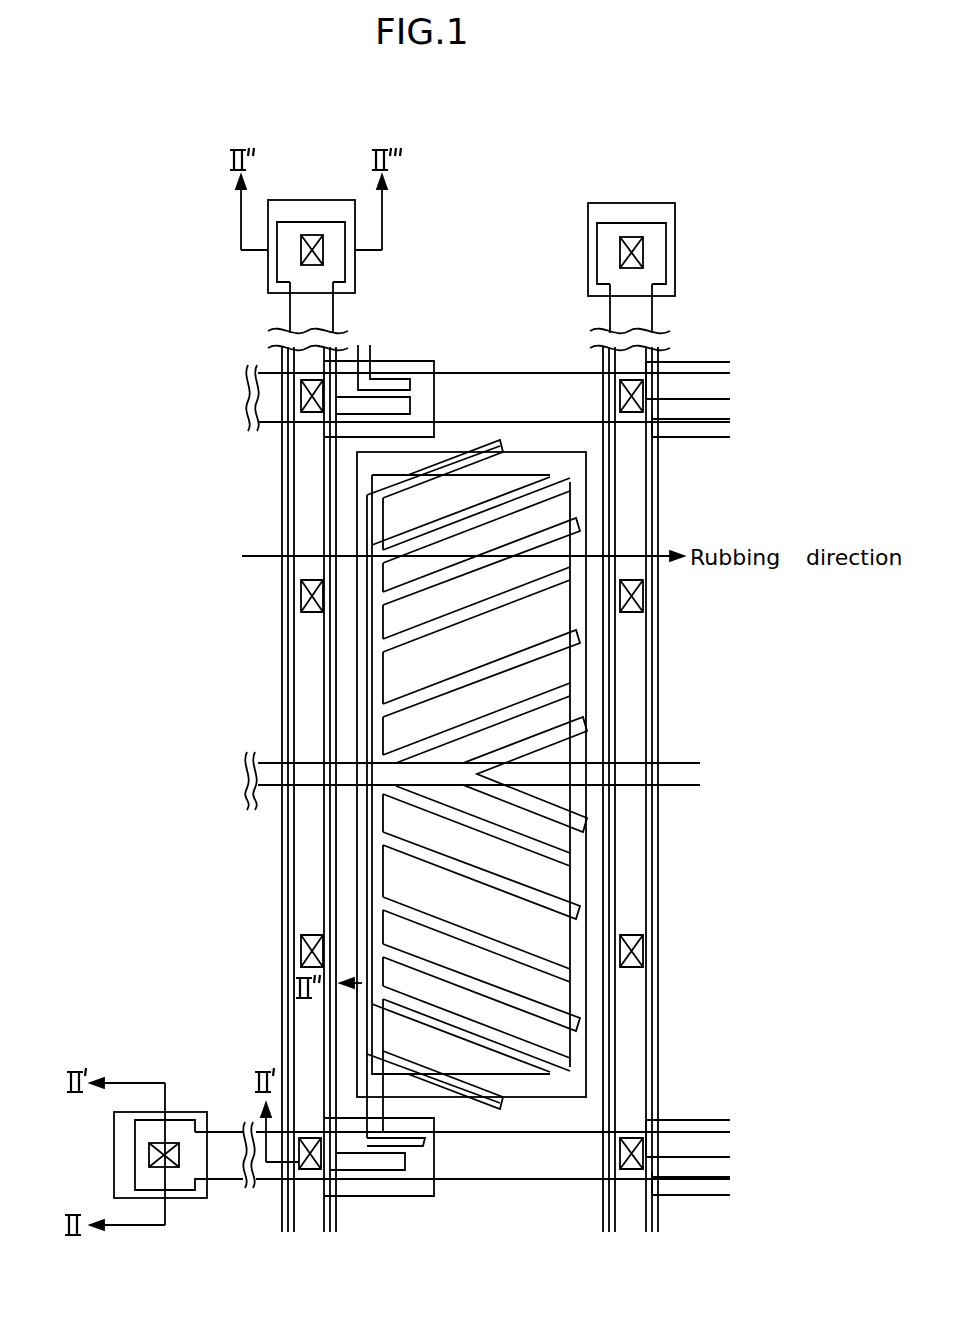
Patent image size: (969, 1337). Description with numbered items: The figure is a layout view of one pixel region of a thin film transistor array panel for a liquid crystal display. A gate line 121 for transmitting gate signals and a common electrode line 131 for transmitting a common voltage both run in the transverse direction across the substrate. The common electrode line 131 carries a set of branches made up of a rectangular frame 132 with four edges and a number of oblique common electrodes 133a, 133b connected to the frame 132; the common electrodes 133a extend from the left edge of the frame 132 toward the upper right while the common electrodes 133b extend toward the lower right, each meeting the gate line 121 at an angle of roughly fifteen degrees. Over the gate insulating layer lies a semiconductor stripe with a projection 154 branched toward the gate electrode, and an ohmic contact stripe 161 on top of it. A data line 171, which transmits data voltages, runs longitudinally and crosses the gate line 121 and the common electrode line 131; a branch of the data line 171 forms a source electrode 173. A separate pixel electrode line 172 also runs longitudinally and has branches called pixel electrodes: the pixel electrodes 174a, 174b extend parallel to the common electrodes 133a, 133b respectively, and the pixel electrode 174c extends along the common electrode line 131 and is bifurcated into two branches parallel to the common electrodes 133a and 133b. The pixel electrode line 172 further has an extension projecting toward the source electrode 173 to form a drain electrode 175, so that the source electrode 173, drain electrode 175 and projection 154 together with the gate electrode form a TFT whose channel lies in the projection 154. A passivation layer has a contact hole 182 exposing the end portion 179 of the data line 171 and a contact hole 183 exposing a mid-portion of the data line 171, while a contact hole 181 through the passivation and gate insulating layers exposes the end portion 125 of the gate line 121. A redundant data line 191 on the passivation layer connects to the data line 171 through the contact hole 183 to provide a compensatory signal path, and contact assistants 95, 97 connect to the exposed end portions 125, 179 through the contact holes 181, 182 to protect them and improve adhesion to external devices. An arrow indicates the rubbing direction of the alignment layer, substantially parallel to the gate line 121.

The contact assistant 95 is at (114, 1132).
The contact assistant 97 is at (268, 268).
The gate line 121 is at (565, 1183).
The end portion of the gate line 125 is at (182, 1115).
The common electrode line 131 is at (680, 772).
The frame 132 is at (582, 650).
The common electrode 133a is at (548, 850).
The common electrode 133b is at (548, 705).
The projection of the semiconductor stripe 154 is at (420, 1198).
The ohmic contact stripe 161 is at (655, 978).
The data line 171 is at (655, 1020).
The pixel electrode line 172 is at (375, 915).
The source electrode 173 is at (368, 1170).
The pixel electrode 174a is at (395, 850).
The pixel electrode 174b is at (411, 690).
The pixel electrode 174c is at (415, 775).
The drain electrode 175 is at (440, 1137).
The end portion of the data line 179 is at (310, 232).
The contact hole 181 is at (130, 1164).
The contact hole 182 is at (332, 259).
The contact hole 183 is at (641, 915).
The redundant data line 191 is at (660, 1050).